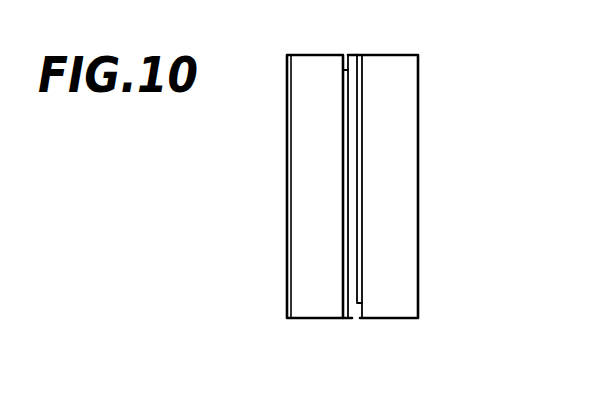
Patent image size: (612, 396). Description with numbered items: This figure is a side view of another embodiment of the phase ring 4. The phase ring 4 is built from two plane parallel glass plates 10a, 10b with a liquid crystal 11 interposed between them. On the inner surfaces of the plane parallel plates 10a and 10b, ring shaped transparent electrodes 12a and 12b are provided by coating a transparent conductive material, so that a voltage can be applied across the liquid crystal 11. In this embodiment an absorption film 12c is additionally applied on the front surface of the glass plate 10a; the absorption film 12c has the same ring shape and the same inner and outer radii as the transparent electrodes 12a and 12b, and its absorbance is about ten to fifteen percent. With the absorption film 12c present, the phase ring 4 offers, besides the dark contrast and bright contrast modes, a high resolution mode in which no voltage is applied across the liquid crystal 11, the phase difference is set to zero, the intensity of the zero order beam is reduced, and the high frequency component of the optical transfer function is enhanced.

The phase ring 4 is at (351, 191).
The plane parallel glass plate 10a is at (299, 276).
The plane parallel glass plate 10b is at (408, 164).
The liquid crystal 11 is at (352, 318).
The transparent electrode 12a is at (343, 143).
The transparent electrode 12b is at (362, 72).
The absorption film 12c is at (287, 218).